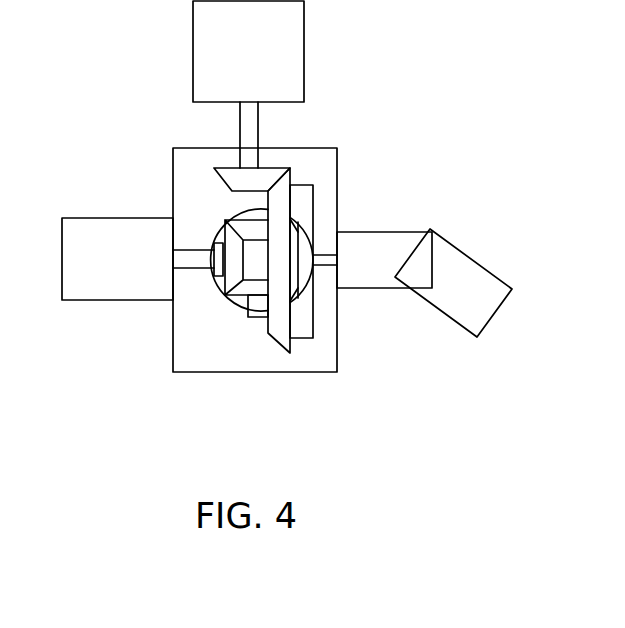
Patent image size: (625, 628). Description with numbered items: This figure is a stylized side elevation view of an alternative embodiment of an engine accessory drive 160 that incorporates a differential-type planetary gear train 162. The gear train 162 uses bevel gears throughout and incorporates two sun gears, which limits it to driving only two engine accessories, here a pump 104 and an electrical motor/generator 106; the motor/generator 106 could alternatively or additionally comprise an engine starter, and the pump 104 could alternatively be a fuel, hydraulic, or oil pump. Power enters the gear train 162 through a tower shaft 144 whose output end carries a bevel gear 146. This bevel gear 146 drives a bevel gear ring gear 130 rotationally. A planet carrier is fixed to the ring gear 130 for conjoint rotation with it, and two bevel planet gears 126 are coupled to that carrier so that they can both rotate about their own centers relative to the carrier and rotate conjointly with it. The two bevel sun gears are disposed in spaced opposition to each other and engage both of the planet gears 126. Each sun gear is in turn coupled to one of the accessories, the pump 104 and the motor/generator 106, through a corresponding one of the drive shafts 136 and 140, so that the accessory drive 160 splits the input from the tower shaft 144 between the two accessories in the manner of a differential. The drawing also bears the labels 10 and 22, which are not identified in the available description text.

The imaging system 10 is at (345, 57).
The controller 22 is at (304, 26).
The pump 104 is at (460, 267).
The electrical motor/generator 106 is at (113, 218).
The bevel planet gears 126 is at (232, 276).
The bevel gear ring gear 130 is at (280, 332).
The drive shaft 136 is at (324, 253).
The drive shaft 140 is at (195, 262).
The tower shaft 144 is at (250, 127).
The bevel gear 146 is at (232, 177).
The engine accessory drive 160 is at (337, 155).
The differential-type planetary gear train 162 is at (235, 343).